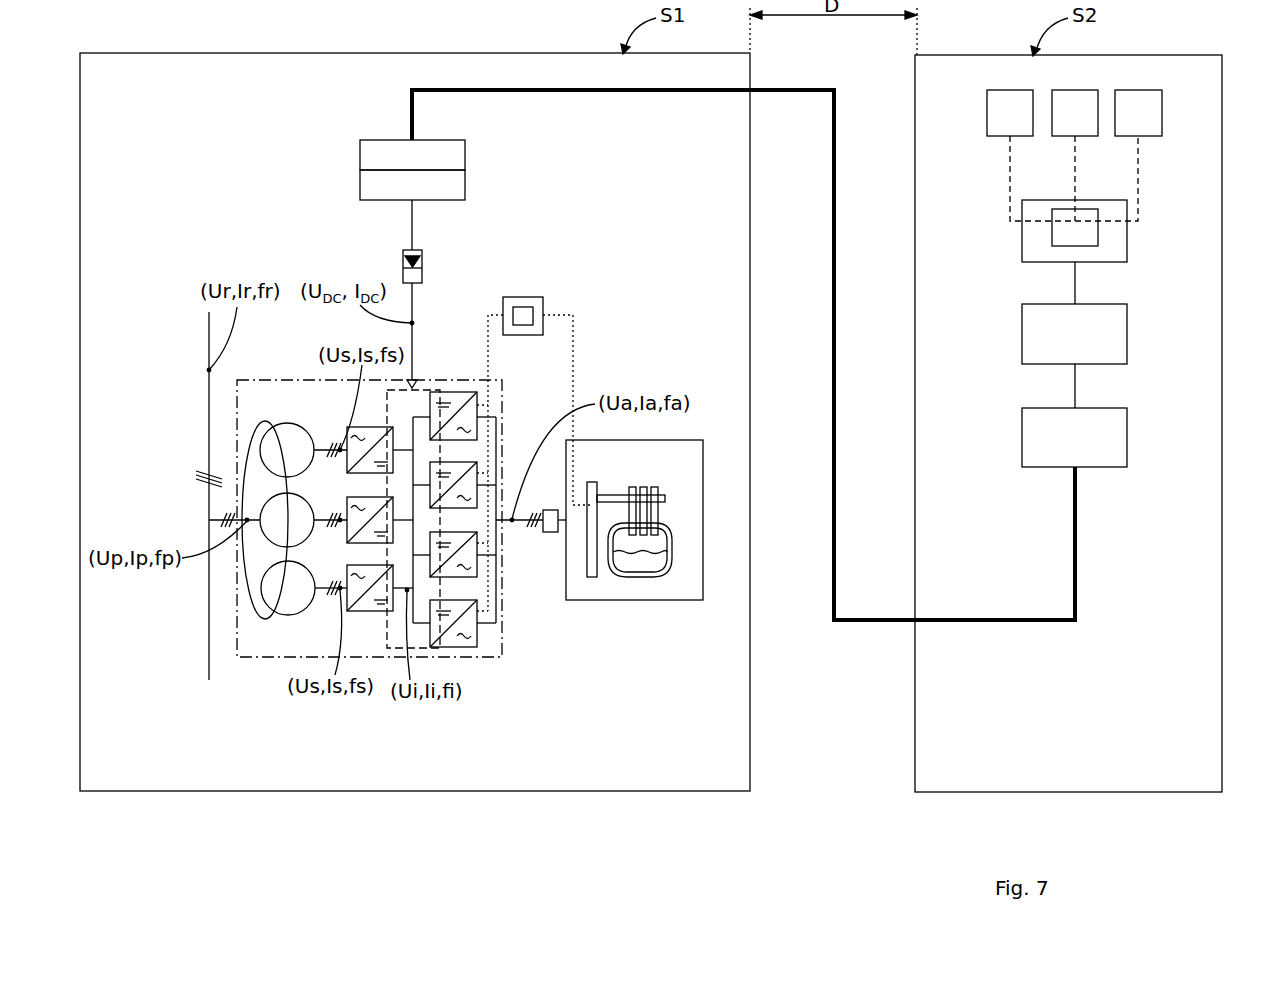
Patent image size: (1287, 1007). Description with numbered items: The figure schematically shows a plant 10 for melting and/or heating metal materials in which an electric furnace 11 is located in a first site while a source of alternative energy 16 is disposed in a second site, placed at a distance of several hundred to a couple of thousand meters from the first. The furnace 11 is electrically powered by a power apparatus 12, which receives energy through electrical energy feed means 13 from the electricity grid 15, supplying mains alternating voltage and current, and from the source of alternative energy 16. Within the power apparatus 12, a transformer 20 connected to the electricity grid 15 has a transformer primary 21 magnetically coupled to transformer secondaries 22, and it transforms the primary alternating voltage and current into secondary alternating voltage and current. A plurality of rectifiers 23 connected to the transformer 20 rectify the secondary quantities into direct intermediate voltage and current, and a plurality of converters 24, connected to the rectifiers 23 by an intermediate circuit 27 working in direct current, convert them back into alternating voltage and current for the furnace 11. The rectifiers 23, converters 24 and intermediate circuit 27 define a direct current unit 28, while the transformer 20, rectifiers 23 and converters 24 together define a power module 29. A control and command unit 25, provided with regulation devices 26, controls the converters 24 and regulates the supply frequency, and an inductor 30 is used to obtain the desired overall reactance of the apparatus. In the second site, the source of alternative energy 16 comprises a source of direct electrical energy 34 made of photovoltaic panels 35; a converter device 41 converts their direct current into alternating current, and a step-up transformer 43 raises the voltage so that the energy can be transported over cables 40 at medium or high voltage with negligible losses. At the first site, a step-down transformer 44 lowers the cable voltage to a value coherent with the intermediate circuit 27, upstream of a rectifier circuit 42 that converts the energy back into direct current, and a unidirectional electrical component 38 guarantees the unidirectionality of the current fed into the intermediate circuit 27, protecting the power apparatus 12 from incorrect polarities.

The plant 10 is at (801, 757).
The electric furnace 11 is at (705, 436).
The power apparatus 12 is at (436, 378).
The electrical energy feed means 13 is at (400, 86).
The electricity grid 15 is at (209, 437).
The source of alternative energy 16 is at (1103, 196).
The transformer 20 is at (252, 636).
The transformer primary 21 is at (250, 596).
The transformer secondary 22 is at (292, 424).
The rectifiers 23 is at (380, 440).
The converters 24 is at (462, 400).
The control and command unit 25 is at (538, 292).
The regulation devices 26 is at (523, 316).
The intermediate circuit 27 is at (422, 416).
The direct current unit 28 is at (447, 653).
The power module 29 is at (230, 641).
The inductor 30 is at (550, 516).
The source of direct electrical energy 34 is at (1075, 227).
The photovoltaic panels 35 is at (1074, 113).
The unidirectional electrical component 38 is at (419, 253).
The cables 40 is at (862, 624).
The converter device 41 is at (1074, 334).
The rectifier circuit 42 is at (1074, 437).
The step-up transformer 43 is at (375, 187).
The step-down transformer 44 is at (375, 155).